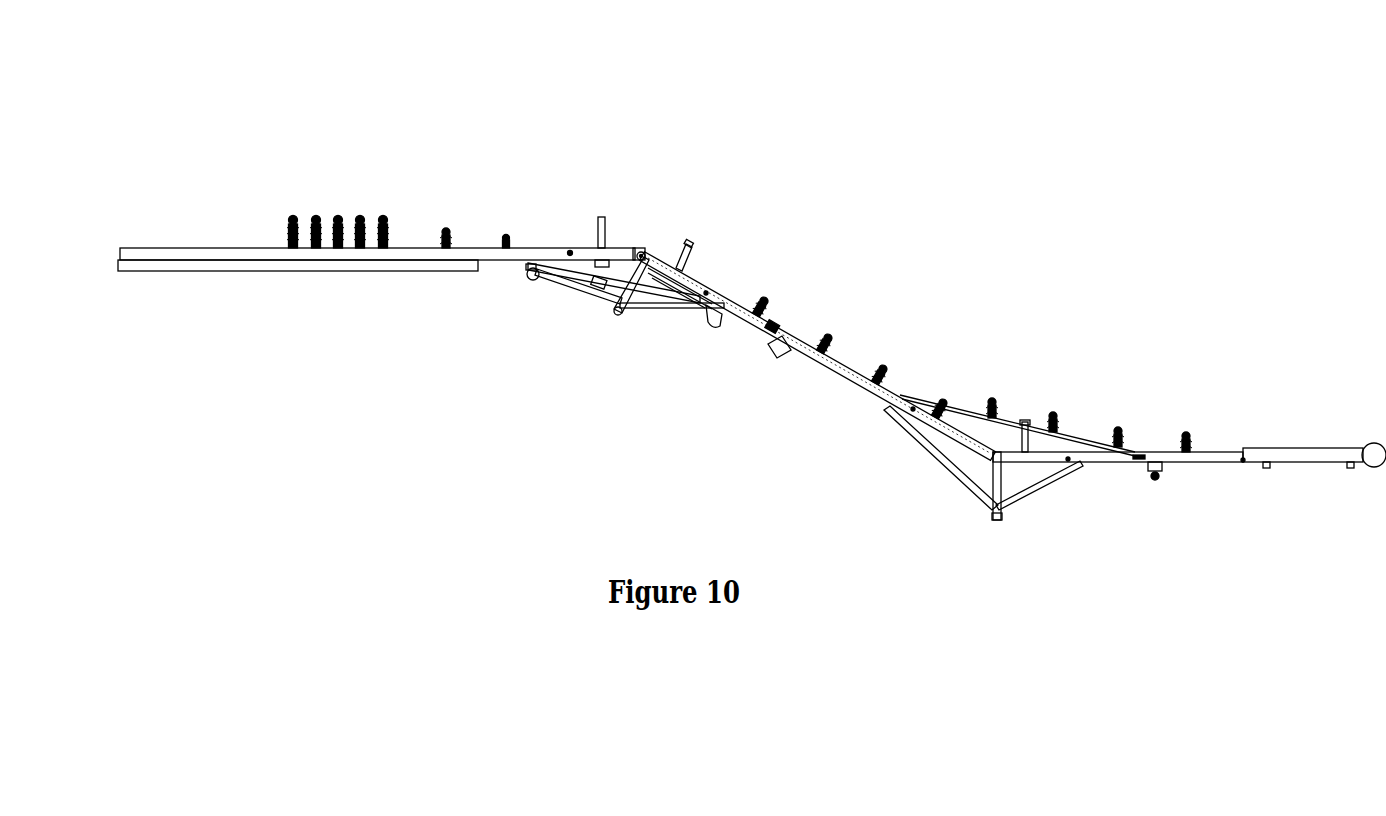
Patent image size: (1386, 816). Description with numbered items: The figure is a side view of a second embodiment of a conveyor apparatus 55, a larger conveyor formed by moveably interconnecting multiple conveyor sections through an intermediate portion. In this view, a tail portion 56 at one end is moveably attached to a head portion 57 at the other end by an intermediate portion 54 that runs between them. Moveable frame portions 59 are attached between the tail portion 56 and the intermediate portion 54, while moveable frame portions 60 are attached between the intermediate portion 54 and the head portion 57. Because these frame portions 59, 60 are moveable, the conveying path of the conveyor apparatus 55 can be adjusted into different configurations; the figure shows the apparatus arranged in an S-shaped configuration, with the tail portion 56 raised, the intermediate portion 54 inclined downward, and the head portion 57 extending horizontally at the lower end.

The intermediate portion 54 is at (800, 299).
The conveyor apparatus 55 is at (663, 372).
The tail portion 56 is at (335, 172).
The head portion 57 is at (1227, 370).
The moveable frame portions 59 is at (648, 214).
The moveable frame portions 60 is at (1013, 360).